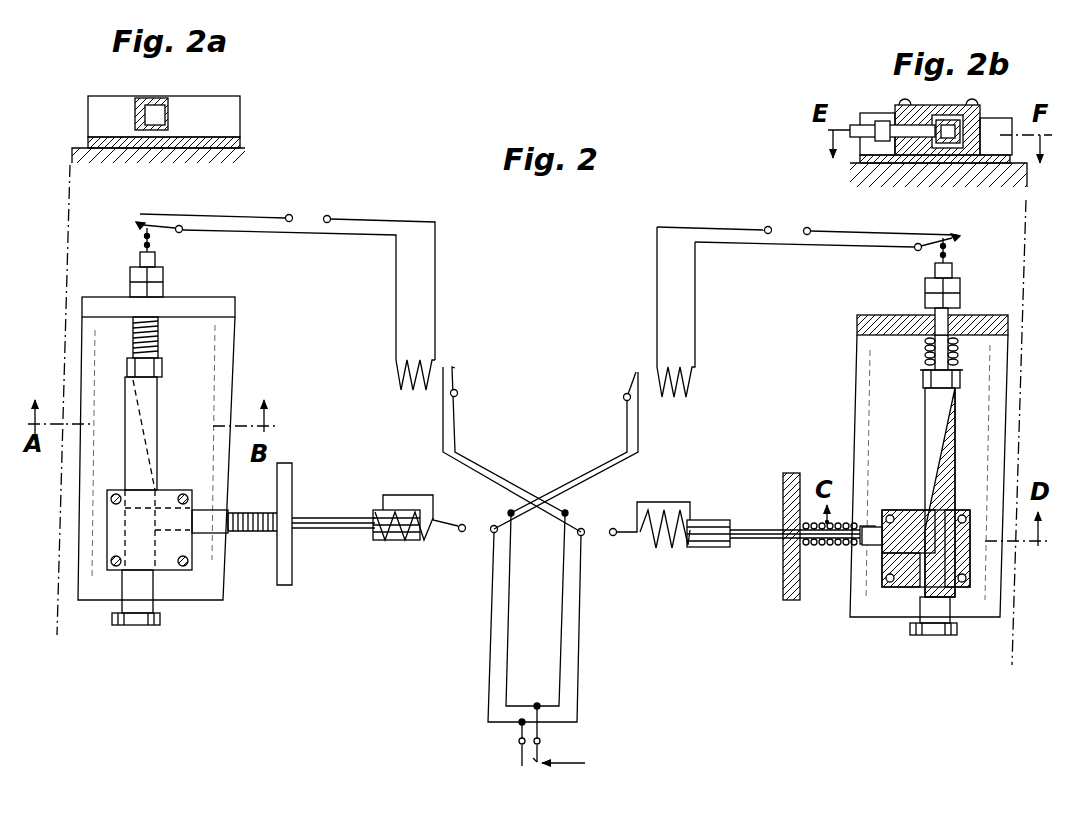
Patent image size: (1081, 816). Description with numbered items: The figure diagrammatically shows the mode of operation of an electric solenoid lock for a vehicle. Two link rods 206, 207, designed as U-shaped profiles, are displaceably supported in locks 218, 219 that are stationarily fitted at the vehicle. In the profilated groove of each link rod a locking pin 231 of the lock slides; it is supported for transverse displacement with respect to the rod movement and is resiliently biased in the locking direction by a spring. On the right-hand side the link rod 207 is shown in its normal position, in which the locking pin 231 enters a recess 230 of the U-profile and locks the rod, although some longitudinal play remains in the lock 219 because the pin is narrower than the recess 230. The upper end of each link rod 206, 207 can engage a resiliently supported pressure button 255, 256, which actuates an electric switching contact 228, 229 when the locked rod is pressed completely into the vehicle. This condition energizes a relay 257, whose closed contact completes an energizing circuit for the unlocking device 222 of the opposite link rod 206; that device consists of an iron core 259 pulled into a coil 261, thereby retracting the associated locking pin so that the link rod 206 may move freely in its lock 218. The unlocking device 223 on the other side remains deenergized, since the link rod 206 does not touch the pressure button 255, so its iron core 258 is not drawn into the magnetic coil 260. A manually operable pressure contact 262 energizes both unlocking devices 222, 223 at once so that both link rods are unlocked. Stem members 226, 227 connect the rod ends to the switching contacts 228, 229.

The link rod 206 is at (133, 442).
The link rod 207 is at (932, 432).
The lock 218 is at (186, 488).
The lock 219 is at (888, 602).
The unlocking device 222 is at (343, 541).
The unlocking device 223 is at (745, 556).
The left contact stem 226 is at (172, 249).
The right contact stem 227 is at (930, 266).
The electric switching contact 228 is at (172, 222).
The electric switching contact 229 is at (930, 238).
The recess 230 is at (950, 520).
The locking pin 231 is at (912, 512).
The pressure button 255 is at (162, 371).
The pressure button 256 is at (923, 379).
The relay 257 is at (647, 363).
The iron core 258 is at (722, 525).
The iron core 259 is at (372, 514).
The magnetic coil 260 is at (657, 546).
The coil 261 is at (398, 541).
The manually operable pressure contact 262 is at (517, 751).